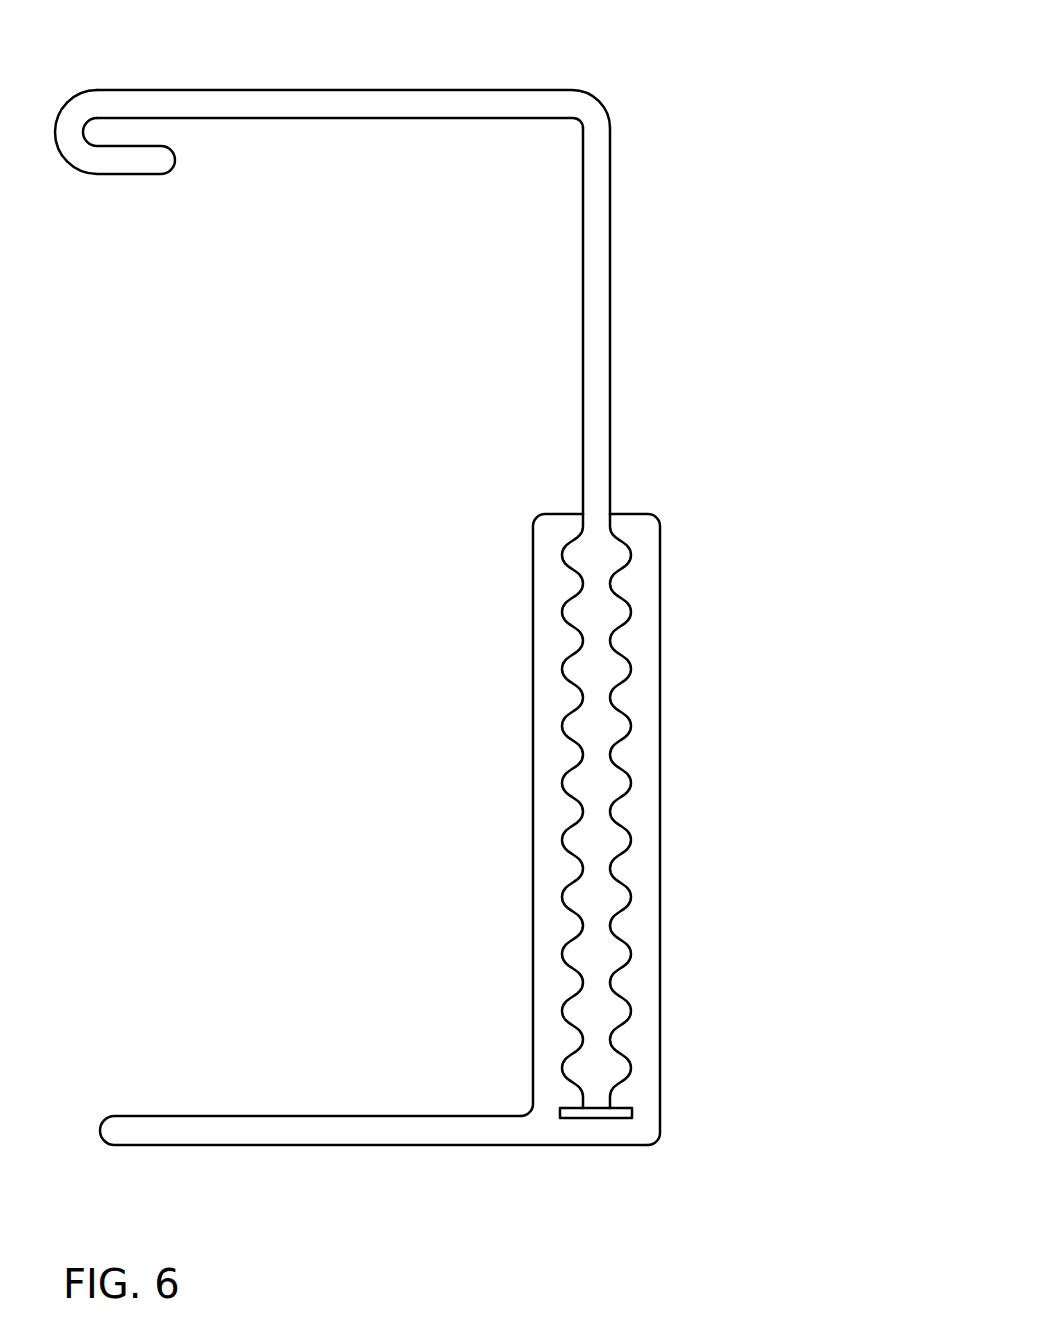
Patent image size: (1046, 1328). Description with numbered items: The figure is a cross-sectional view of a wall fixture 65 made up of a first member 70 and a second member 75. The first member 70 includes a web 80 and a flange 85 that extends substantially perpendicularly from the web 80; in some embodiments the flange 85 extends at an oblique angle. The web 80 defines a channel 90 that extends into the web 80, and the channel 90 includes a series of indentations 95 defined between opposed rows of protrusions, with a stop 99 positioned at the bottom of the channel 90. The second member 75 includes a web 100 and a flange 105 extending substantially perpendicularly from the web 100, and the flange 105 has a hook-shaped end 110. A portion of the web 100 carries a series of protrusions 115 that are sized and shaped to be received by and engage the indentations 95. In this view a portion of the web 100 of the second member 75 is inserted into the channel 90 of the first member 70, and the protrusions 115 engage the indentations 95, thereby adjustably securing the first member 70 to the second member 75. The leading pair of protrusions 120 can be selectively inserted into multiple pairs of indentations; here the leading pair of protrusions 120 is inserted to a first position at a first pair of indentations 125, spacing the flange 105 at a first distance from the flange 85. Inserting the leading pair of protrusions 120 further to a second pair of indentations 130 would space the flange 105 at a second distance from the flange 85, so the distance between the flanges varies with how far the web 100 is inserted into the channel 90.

The wall fixture 65 is at (676, 86).
The first member 70 is at (713, 840).
The second member 75 is at (668, 344).
The web 80 is at (657, 686).
The flange 85 is at (287, 1123).
The channel 90 is at (583, 517).
The indentations 95 is at (558, 672).
The stop 99 is at (585, 1113).
The web 100 is at (612, 237).
The flange 105 is at (372, 96).
The hook-shaped end 110 is at (118, 163).
The protrusions 115 is at (632, 613).
The leading pair of protrusions 120 is at (557, 1066).
The first pair of indentations 125 is at (630, 1066).
The second pair of indentations 130 is at (632, 955).